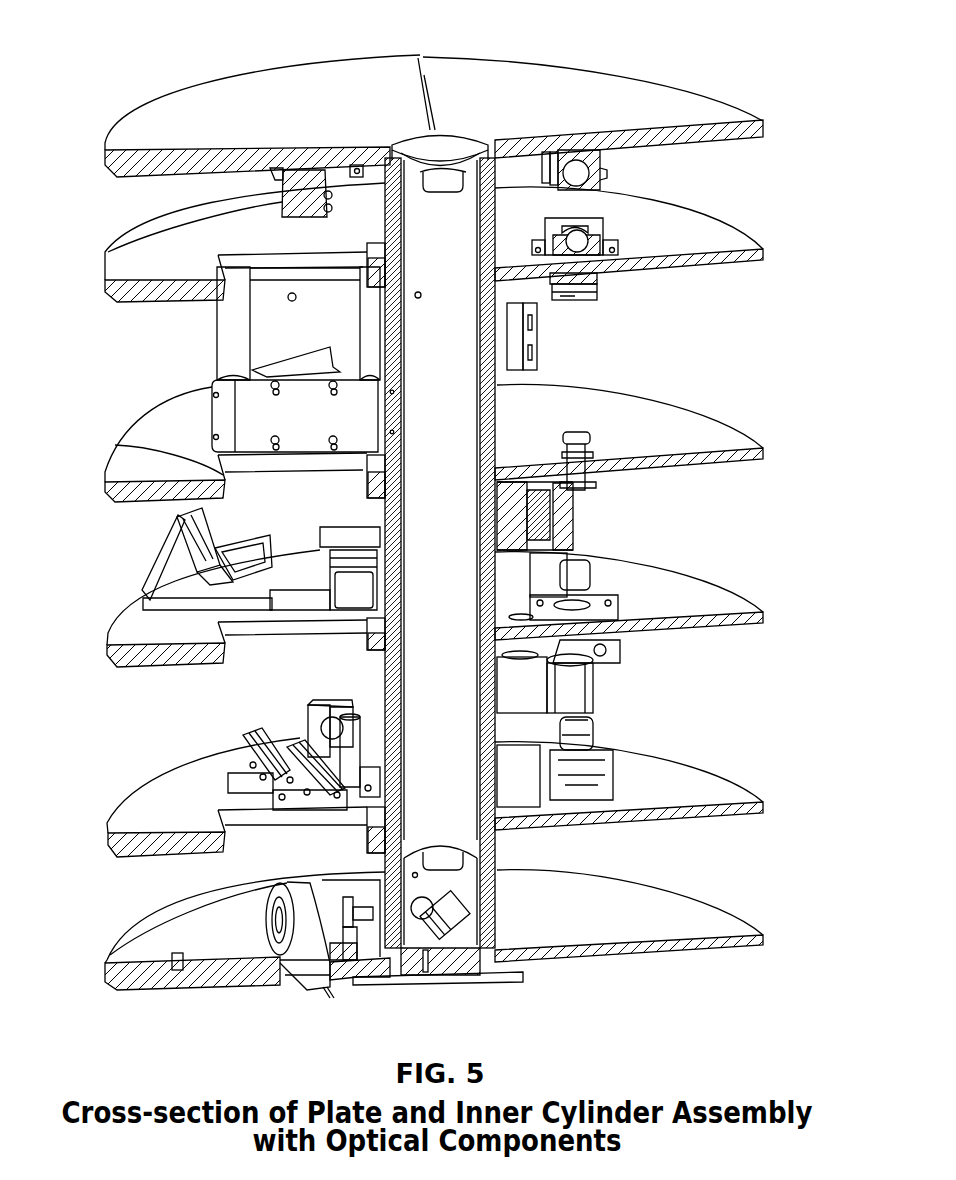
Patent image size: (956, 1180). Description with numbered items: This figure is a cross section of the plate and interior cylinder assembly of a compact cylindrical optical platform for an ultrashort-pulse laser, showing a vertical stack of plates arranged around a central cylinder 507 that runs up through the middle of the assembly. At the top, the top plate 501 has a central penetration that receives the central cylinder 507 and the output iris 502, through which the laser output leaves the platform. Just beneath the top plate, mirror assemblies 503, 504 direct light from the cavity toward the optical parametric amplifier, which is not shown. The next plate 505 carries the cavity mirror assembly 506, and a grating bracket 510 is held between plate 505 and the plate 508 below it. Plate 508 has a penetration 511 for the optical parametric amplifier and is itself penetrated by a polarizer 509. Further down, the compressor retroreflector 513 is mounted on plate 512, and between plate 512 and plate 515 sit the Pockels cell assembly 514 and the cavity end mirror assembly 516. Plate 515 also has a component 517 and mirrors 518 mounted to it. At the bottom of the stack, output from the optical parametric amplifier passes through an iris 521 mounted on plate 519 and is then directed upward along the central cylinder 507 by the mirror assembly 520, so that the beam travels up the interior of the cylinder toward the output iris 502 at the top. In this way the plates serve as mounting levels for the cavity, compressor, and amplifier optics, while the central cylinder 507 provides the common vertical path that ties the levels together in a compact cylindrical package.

The top plate 501 is at (575, 63).
The output iris 502 is at (442, 167).
The mirror assembly 503 is at (600, 163).
The mirror assembly 504 is at (135, 250).
The plate 505 is at (685, 223).
The cavity mirror assembly 506 is at (615, 253).
The central cylinder 507 is at (468, 362).
The plate 508 is at (658, 413).
The polarizer 509 is at (590, 487).
The grating bracket 510 is at (250, 420).
The penetration 511 is at (133, 445).
The plate 512 is at (663, 583).
The compressor retroreflector 513 is at (143, 601).
The Pockels cell assembly 514 is at (595, 673).
The plate 515 is at (697, 823).
The cavity end mirror assembly 516 is at (607, 735).
The component 517 is at (293, 720).
The mirrors 518 is at (237, 748).
The plate 519 is at (663, 903).
The mirror assembly 520 is at (458, 975).
The iris 521 is at (268, 937).